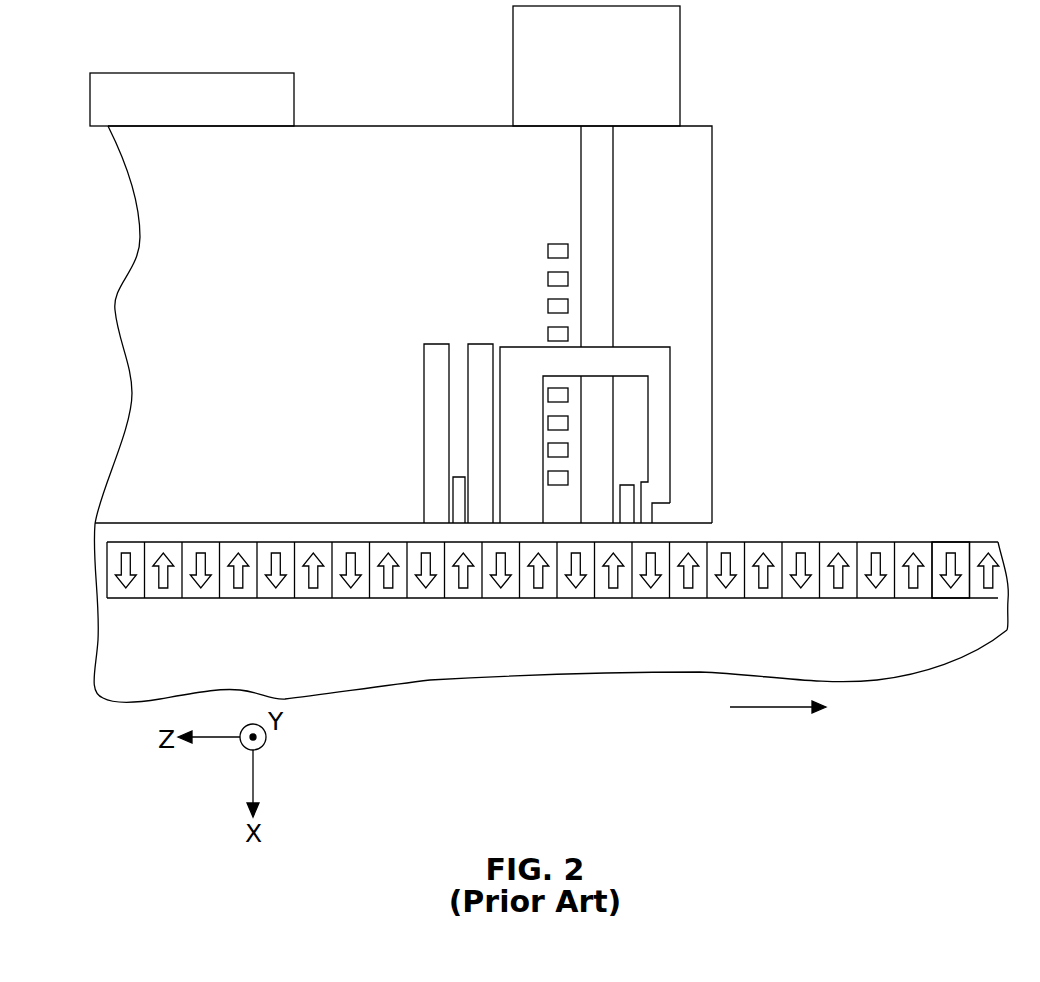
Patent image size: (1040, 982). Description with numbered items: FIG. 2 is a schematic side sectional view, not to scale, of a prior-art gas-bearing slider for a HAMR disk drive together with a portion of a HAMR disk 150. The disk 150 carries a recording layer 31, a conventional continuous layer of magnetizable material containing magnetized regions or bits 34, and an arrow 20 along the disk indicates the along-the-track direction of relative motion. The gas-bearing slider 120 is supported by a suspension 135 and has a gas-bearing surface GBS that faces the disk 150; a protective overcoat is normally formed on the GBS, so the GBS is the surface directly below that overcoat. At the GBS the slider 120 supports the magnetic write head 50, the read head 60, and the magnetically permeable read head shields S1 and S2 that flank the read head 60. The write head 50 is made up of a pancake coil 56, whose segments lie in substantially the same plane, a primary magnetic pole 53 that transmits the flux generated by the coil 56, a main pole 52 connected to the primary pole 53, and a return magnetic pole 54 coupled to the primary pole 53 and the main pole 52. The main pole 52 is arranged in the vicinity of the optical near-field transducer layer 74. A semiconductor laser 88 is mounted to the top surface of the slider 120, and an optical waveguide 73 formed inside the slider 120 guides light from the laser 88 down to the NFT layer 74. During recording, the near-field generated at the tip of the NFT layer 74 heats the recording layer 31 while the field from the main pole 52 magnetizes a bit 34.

The suspension 135 is at (228, 95).
The semiconductor laser 88 is at (667, 66).
The gas-bearing slider 120 is at (142, 410).
The gas-bearing surface GBS is at (690, 535).
The magnetic write head 50 is at (608, 324).
The optical waveguide 73 is at (596, 286).
The coil 56 is at (546, 250).
The return magnetic pole 54 is at (523, 358).
The main pole 52 is at (648, 515).
The primary magnetic pole 53 is at (662, 393).
The optical near-field transducer layer 74 is at (628, 483).
The read head shield S1 is at (437, 432).
The read head shield S2 is at (480, 340).
The read head 60 is at (450, 508).
The recording layer 31 is at (80, 542).
The magnetized regions or bits 34 is at (947, 555).
The disk 150 is at (877, 668).
The medium motion direction 20 is at (767, 712).